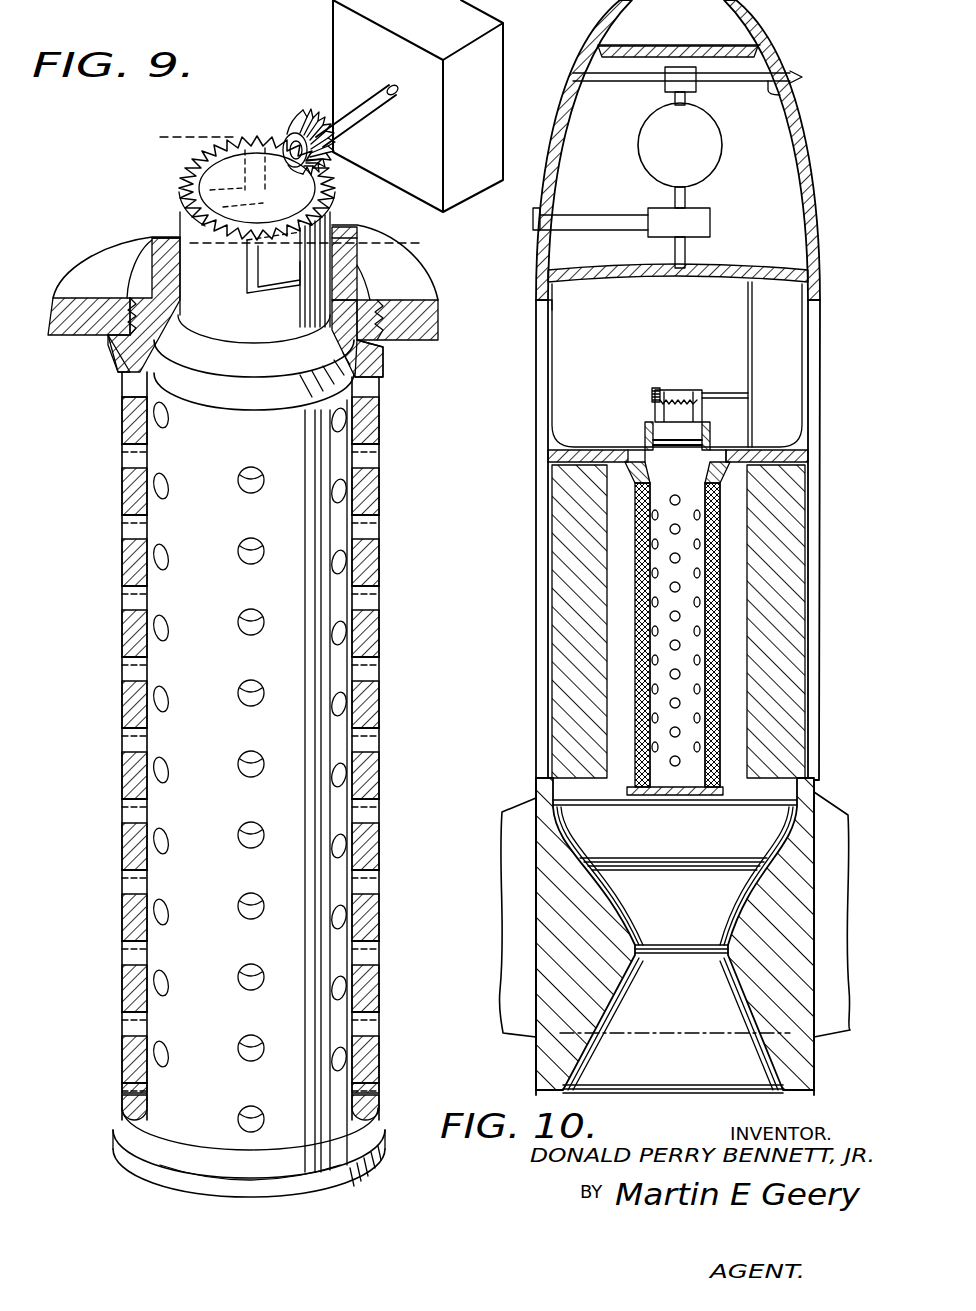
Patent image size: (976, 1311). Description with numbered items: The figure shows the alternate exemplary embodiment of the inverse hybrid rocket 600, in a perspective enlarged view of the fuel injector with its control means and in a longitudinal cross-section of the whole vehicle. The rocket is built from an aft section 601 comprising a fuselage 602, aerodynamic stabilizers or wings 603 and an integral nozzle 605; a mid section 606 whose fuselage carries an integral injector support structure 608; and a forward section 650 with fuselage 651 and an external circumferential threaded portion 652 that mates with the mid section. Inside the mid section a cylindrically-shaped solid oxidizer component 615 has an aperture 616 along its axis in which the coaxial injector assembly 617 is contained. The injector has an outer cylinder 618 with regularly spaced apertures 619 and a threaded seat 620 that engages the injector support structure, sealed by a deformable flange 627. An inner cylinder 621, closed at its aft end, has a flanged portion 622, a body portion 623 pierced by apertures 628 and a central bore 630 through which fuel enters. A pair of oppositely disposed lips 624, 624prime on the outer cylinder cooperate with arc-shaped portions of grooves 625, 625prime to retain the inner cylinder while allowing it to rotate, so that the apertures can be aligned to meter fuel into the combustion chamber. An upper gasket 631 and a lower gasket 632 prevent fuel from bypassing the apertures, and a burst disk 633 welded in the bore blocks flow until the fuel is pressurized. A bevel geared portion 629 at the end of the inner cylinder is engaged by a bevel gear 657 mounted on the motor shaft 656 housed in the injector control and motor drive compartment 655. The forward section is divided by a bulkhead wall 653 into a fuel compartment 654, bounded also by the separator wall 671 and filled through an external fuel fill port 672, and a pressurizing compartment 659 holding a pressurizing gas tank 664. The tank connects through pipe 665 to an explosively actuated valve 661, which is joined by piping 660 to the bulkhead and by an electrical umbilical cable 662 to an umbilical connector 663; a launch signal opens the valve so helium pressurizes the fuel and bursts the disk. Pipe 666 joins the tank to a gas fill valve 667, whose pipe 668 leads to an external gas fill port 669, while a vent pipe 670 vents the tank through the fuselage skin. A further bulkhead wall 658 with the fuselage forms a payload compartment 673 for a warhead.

In FIG. 10, the inverse hybrid rocket 600 is at (503, 761).
In FIG. 10, the aft section 601 is at (523, 1058).
In FIG. 10, the fuselage 602 is at (810, 1067).
In FIG. 10, the aerodynamic stabilizers or wings 603 is at (501, 921).
In FIG. 10, the nozzle 605 is at (653, 1085).
In FIG. 10, the mid section 606 is at (524, 634).
In FIG. 9, the injector support structure 608 is at (410, 290).
In FIG. 10, the oxidizer component 615 is at (575, 669).
In FIG. 10, the aperture 616 is at (600, 546).
In FIG. 9, the injector assembly 617 is at (110, 720).
In FIG. 10, the injector assembly 617 is at (732, 792).
In FIG. 9, the outer cylinder 618 is at (137, 628).
In FIG. 9, the apertures 619 is at (121, 465).
In FIG. 10, the apertures 619 is at (722, 601).
In FIG. 9, the threaded seat 620 is at (386, 352).
In FIG. 9, the inner cylinder 621 is at (106, 1172).
In FIG. 10, the inner cylinder 621 is at (672, 806).
In FIG. 9, the flanged portion 622 is at (160, 1170).
In FIG. 9, the body portion 623 is at (215, 1160).
In FIG. 9, the lip 624 is at (328, 245).
In FIG. 9, the lip 624prime is at (152, 238).
In FIG. 9, the groove 625 is at (246, 272).
In FIG. 9, the groove 625prime is at (160, 137).
In FIG. 9, the deformable flange 627 is at (110, 342).
In FIG. 9, the apertures 628 is at (248, 546).
In FIG. 10, the apertures 628 is at (676, 556).
In FIG. 9, the bevel geared portion 629 is at (192, 175).
In FIG. 10, the bevel geared portion 629 is at (658, 402).
In FIG. 9, the bore 630 is at (300, 190).
In FIG. 10, the bore 630 is at (660, 395).
In FIG. 9, the upper gasket 631 is at (290, 361).
In FIG. 10, the upper gasket 631 is at (634, 471).
In FIG. 9, the lower gasket 632 is at (120, 1105).
In FIG. 10, the burst disk 633 is at (660, 433).
In FIG. 10, the forward section 650 is at (525, 401).
In FIG. 10, the fuselage 651 is at (820, 232).
In FIG. 10, the external circumferential threaded portion 652 is at (548, 445).
In FIG. 10, the bulkhead wall 653 is at (596, 283).
In FIG. 10, the fuel compartment 654 is at (677, 365).
In FIG. 9, the injector control and motor drive compartment 655 is at (427, 193).
In FIG. 10, the injector control and motor drive compartment 655 is at (793, 373).
In FIG. 9, the shaft 656 is at (362, 110).
In FIG. 10, the shaft 656 is at (740, 395).
In FIG. 9, the bevel gear 657 is at (300, 112).
In FIG. 10, the bevel gear 657 is at (692, 388).
In FIG. 10, the bulkhead wall 658 is at (626, 46).
In FIG. 10, the pressurizing compartment 659 is at (595, 209).
In FIG. 10, the piping 660 is at (686, 249).
In FIG. 10, the explosively actuated valve 661 is at (686, 222).
In FIG. 10, the electrical umbilical cable 662 is at (618, 230).
In FIG. 10, the umbilical connector 663 is at (540, 220).
In FIG. 10, the pressurizing gas tank 664 is at (680, 145).
In FIG. 10, the pipe 665 is at (686, 199).
In FIG. 10, the pipe 666 is at (686, 99).
In FIG. 10, the gas fill valve 667 is at (672, 80).
In FIG. 10, the pipe 668 is at (782, 95).
In FIG. 10, the external gas fill port 669 is at (792, 72).
In FIG. 10, the vent pipe 670 is at (587, 80).
In FIG. 10, the separator wall 671 is at (748, 293).
In FIG. 10, the fuel fill port 672 is at (548, 319).
In FIG. 10, the payload compartment 673 is at (679, 24).